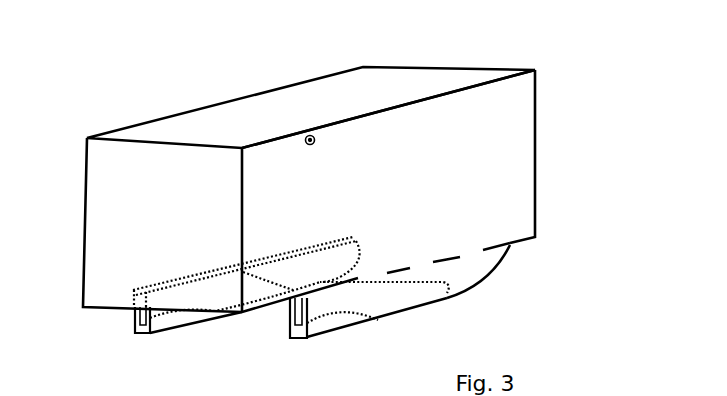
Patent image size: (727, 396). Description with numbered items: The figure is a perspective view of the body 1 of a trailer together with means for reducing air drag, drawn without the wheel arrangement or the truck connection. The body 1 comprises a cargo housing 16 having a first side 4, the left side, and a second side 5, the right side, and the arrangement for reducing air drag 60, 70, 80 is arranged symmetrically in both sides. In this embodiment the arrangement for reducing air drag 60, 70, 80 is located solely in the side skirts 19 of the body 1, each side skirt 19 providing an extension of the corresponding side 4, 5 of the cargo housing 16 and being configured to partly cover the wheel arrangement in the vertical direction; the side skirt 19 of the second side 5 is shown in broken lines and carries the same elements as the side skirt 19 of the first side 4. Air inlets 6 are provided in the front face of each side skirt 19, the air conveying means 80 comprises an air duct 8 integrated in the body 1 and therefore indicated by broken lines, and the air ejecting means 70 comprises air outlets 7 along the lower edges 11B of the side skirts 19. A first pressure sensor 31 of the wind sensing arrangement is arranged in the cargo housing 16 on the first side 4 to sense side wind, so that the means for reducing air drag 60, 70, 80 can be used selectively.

The body 1 is at (359, 100).
The second side 5 is at (193, 107).
The first side 4 is at (473, 143).
The cargo housing 16 is at (132, 193).
The first pressure sensor 31 is at (314, 145).
The side skirt 19 is at (218, 268).
The air conveying means 80 is at (268, 277).
The air duct 8 is at (358, 313).
The air inlet 6 is at (310, 330).
The means for reducing air drag 60 is at (242, 334).
The air ejecting means 70 is at (385, 332).
The air outlet 7 is at (410, 313).
The lower edge 11B is at (432, 302).